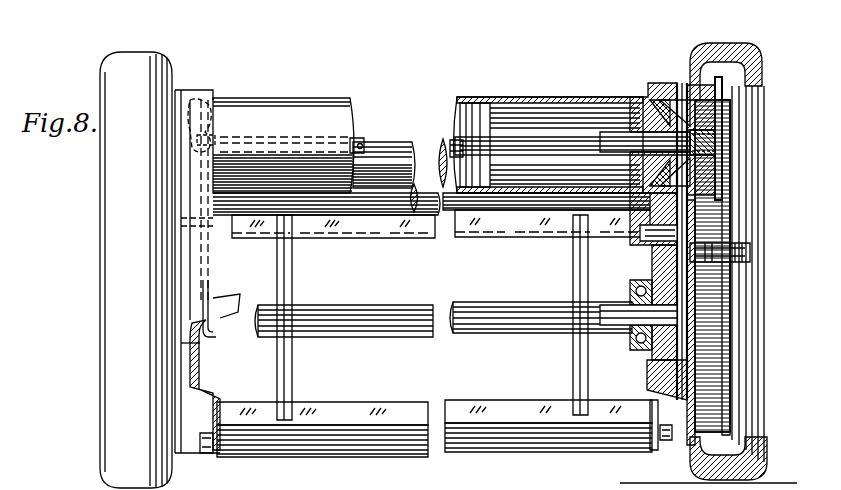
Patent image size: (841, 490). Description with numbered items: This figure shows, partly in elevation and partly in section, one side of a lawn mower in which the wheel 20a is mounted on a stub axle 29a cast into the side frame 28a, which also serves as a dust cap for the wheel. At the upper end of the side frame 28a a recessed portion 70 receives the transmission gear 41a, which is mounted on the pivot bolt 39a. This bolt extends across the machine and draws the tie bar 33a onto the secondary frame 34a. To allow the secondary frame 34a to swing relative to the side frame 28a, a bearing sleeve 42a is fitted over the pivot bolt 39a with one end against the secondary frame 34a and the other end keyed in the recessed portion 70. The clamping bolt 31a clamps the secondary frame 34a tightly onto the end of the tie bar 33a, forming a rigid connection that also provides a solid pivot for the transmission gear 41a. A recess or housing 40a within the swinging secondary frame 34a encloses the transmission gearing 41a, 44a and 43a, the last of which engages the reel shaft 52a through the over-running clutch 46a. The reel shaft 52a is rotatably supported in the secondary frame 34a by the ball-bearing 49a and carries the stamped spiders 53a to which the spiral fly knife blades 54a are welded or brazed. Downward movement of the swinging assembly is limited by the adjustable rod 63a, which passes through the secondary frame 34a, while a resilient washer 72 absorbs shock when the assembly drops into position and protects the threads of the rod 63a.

The wheel 20a is at (110, 190).
The side frame 28a is at (738, 84).
The stub axle 29a is at (412, 142).
The clamping bolt 31a is at (720, 141).
The tie bar 33a is at (302, 98).
The secondary frame 34a is at (200, 370).
The pivot bolt 39a is at (363, 140).
The recess or housing 40a is at (656, 371).
The transmission gear 41a is at (735, 112).
The bearing sleeve 42a is at (695, 103).
The transmission gear 43a is at (705, 332).
The transmission gear 44a is at (655, 247).
The over-running clutch 46a is at (650, 310).
The ball-bearing 49a is at (650, 272).
The reel shaft 52a is at (510, 302).
The spider 53a is at (292, 367).
The blade 54a is at (379, 238).
The adjustable rod 63a is at (200, 218).
The recessed portion 70 is at (722, 186).
The washer 72 is at (200, 137).